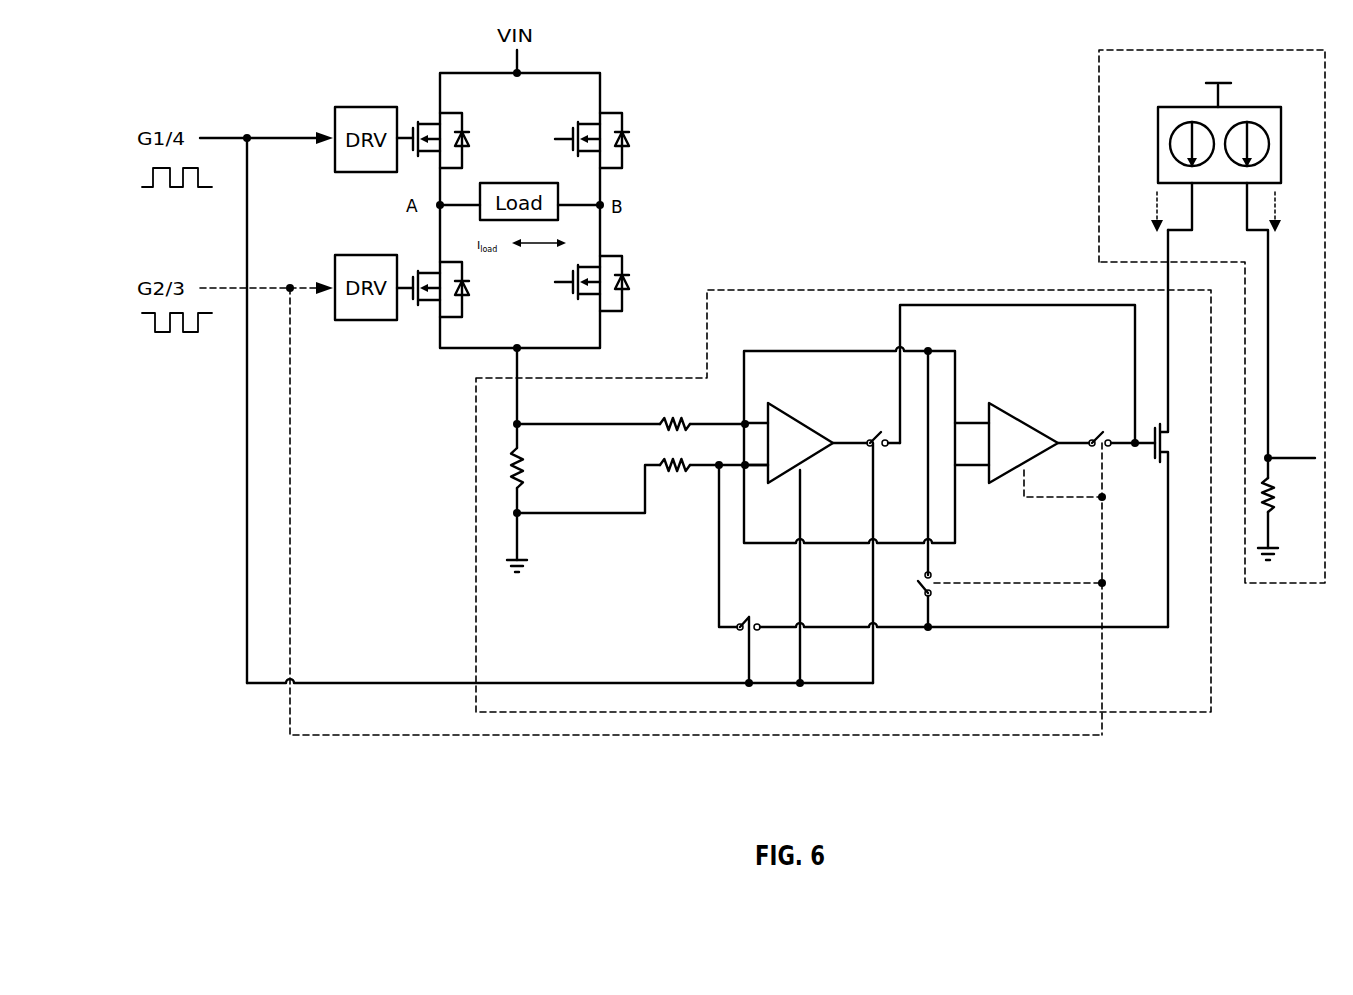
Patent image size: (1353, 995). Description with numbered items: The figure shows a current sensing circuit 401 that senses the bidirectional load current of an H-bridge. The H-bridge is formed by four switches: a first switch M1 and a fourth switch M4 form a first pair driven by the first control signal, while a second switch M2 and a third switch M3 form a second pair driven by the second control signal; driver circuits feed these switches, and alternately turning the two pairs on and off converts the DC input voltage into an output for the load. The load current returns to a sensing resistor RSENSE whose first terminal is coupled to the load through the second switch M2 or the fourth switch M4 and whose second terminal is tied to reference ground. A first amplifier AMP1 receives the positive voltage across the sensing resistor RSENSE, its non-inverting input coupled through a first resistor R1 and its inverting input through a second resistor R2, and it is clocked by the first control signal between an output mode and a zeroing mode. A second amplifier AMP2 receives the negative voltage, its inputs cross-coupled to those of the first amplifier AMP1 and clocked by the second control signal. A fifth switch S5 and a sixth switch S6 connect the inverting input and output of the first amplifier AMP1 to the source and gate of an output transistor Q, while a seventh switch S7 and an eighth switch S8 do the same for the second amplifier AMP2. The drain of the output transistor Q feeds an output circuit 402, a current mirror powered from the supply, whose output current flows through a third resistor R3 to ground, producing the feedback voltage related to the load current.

The current sensing circuit 401 is at (476, 598).
The output circuit 402 is at (1181, 316).
The first switch M1 is at (459, 140).
The second switch M2 is at (459, 289).
The third switch M3 is at (610, 140).
The fourth switch M4 is at (610, 283).
The sensing resistor RSENSE is at (546, 460).
The first resistor R1 is at (633, 413).
The second resistor R2 is at (642, 486).
The third resistor R3 is at (1283, 495).
The first amplifier AMP1 is at (788, 443).
The second amplifier AMP2 is at (1006, 443).
The fifth switch S5 is at (943, 574).
The sixth switch S6 is at (866, 428).
The seventh switch S7 is at (992, 600).
The eighth switch S8 is at (1106, 426).
The output transistor Q is at (1175, 428).